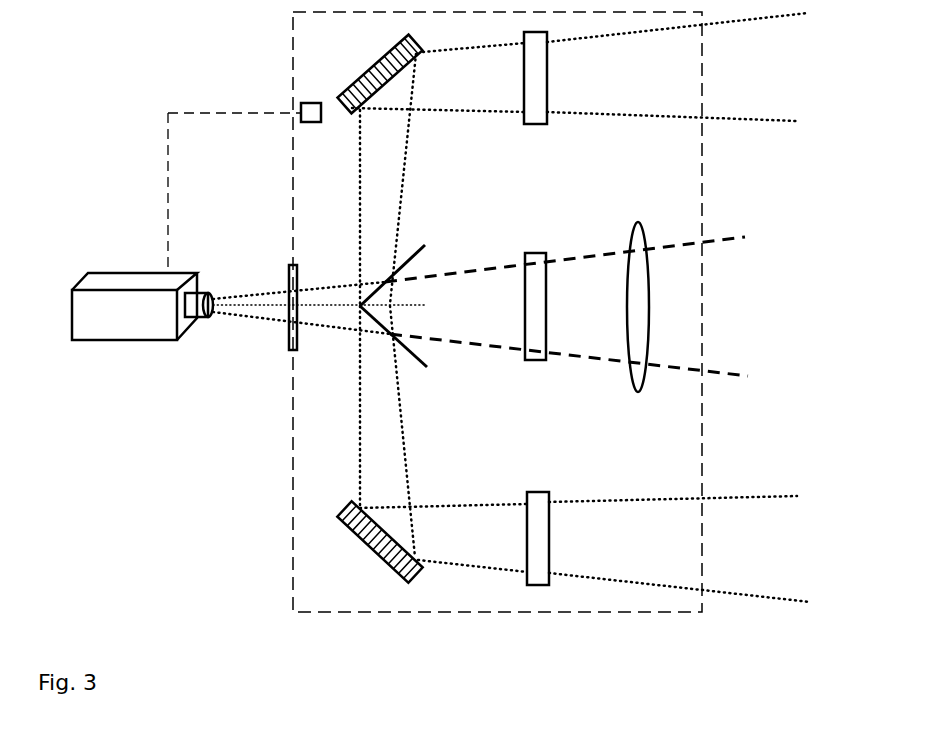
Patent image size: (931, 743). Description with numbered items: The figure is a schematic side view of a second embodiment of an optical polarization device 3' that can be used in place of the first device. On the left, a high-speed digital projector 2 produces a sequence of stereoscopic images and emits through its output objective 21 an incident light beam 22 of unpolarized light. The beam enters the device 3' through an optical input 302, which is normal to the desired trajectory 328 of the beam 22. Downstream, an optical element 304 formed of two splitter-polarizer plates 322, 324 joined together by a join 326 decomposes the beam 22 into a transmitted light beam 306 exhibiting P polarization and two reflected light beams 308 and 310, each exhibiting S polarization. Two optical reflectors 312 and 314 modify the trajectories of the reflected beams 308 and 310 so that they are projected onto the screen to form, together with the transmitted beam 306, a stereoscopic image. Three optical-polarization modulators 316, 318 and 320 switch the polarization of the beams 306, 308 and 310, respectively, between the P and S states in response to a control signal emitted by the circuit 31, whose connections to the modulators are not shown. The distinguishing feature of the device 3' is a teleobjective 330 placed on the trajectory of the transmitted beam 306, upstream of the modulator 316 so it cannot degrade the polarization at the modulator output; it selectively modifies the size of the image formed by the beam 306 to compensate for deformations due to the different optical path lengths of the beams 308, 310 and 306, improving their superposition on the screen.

The projector 2 is at (131, 333).
The output objective 21 is at (205, 297).
The incident light beam 22 is at (218, 320).
The circuit 31 is at (308, 103).
The optical input 302 is at (293, 263).
The optical element 304 is at (430, 358).
The transmitted light beam 306 is at (610, 326).
The reflected light beam 308 is at (657, 97).
The reflected light beam 310 is at (660, 563).
The optical reflector 312 is at (363, 68).
The optical reflector 314 is at (362, 542).
The optical-polarization modulator 316 is at (540, 360).
The optical-polarization modulator 318 is at (540, 124).
The optical-polarization modulator 320 is at (540, 585).
The plate 322 is at (414, 250).
The plate 324 is at (400, 350).
The join 326 is at (358, 306).
The trajectory 328 is at (245, 298).
The teleobjective 330 is at (640, 392).
The device 3' is at (466, 312).